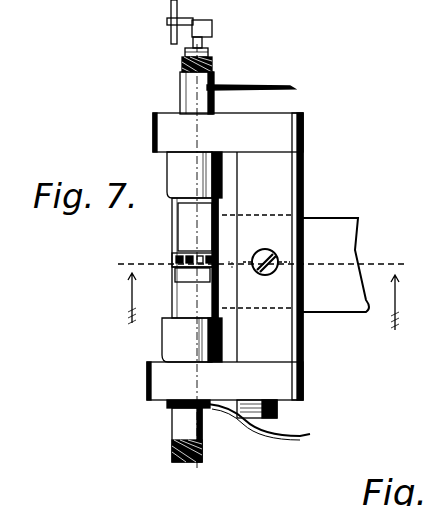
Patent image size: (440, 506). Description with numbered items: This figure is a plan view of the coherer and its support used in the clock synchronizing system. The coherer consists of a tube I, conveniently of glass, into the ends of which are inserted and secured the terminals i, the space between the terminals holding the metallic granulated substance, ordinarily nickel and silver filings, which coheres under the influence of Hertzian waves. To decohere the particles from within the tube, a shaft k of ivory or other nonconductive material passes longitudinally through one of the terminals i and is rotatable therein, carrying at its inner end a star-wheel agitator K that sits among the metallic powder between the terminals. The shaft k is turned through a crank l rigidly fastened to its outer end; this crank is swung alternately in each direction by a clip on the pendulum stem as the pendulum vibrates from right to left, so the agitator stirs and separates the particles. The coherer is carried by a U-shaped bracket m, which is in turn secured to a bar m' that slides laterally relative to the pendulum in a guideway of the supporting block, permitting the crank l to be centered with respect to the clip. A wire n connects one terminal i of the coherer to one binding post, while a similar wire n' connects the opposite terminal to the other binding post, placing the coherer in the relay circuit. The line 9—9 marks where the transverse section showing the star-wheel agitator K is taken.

The crank l is at (167, 21).
The shaft k is at (203, 42).
The terminals i is at (206, 256).
The wire n is at (251, 78).
The tube I is at (171, 247).
The star-wheel agitator K is at (177, 263).
The U-shaped bracket m is at (225, 256).
The bar m' is at (336, 265).
The section line 9- 9 is at (259, 292).
The wire n' is at (266, 420).